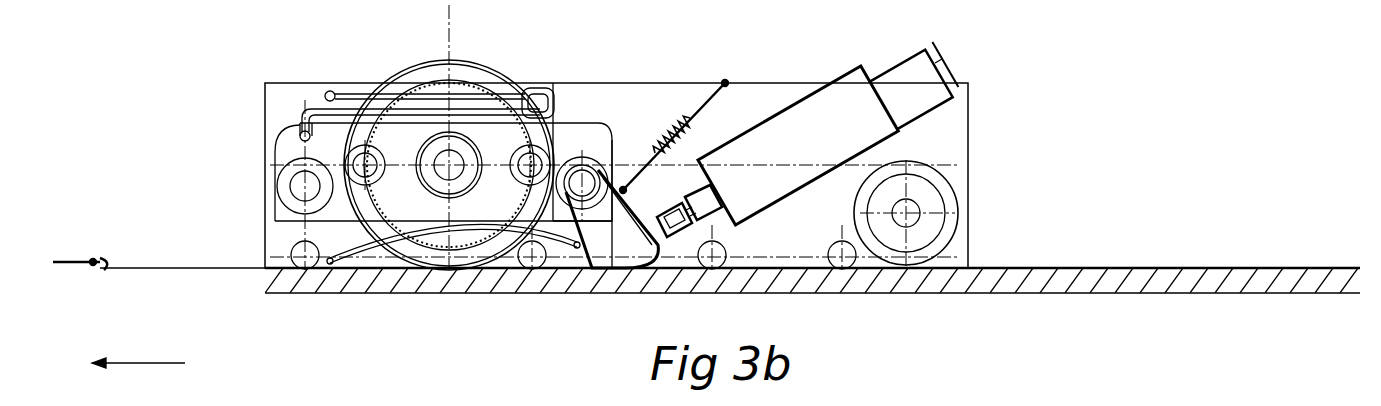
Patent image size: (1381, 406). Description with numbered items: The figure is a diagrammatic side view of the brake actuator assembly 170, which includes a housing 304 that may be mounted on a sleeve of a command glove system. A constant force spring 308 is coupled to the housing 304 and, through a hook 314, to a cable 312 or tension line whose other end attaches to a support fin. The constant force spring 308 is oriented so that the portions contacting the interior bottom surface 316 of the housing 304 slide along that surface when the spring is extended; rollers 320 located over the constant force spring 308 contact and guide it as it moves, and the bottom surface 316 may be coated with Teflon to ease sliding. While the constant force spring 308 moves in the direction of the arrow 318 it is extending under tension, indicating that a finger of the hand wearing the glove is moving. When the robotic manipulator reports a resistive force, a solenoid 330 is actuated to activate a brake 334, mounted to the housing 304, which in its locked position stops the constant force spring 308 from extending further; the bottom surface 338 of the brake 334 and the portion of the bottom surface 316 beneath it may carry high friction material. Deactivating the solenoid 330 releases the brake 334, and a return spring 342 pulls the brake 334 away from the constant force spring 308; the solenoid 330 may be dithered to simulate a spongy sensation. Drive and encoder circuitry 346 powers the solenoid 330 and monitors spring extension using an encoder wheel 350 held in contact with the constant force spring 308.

The brake actuator assembly 170 is at (1128, 122).
The housing 304 is at (1045, 298).
The constant force spring 308 is at (205, 272).
The cable 312 is at (65, 265).
The hook 314 is at (105, 258).
The interior bottom surface 316 is at (880, 268).
The arrow 318 is at (162, 368).
The rollers 320 is at (302, 247).
The solenoid 330 is at (805, 110).
The brake 334 is at (633, 217).
The bottom surface of brake 338 is at (647, 272).
The return spring 342 is at (703, 100).
The drive and encoder circuitry 346 is at (575, 135).
The encoder wheel 350 is at (492, 80).